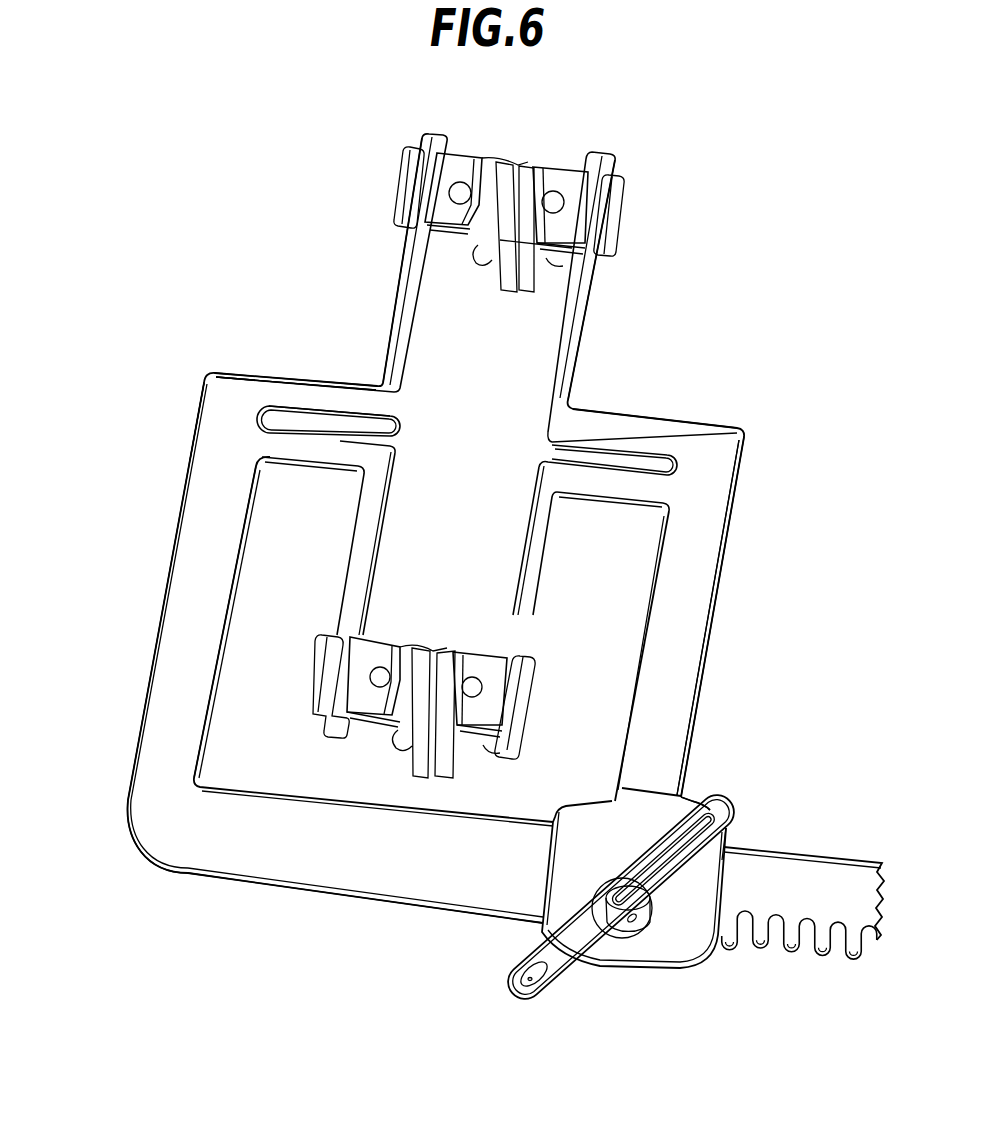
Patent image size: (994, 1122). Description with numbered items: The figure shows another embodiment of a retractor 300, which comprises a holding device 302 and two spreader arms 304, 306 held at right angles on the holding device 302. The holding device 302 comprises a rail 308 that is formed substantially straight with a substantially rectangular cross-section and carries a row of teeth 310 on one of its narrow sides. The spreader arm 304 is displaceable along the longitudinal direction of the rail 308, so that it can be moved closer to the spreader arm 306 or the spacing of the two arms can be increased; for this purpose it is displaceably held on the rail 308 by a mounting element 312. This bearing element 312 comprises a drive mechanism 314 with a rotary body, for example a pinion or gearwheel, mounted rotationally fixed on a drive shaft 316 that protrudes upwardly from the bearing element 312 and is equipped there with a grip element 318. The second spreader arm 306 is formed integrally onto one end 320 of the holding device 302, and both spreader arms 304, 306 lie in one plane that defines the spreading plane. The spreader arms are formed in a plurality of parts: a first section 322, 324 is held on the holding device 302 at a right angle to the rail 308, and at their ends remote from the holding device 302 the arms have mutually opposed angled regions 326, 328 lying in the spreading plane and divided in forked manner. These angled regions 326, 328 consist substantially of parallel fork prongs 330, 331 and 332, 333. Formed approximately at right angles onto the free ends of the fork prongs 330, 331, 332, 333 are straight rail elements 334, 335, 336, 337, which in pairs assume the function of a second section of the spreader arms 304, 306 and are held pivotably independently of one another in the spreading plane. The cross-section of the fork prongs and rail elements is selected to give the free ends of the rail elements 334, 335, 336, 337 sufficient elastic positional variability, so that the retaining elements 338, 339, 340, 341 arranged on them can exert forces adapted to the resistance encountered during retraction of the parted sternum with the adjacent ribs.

The retractor 300 is at (712, 286).
The holding device 302 is at (372, 918).
The spreader arm 304 is at (735, 570).
The spreader arm 306 is at (170, 570).
The rail 308 is at (813, 845).
The row of teeth 310 is at (835, 952).
The mounting element 312 is at (735, 820).
The drive mechanism 314 is at (620, 972).
The drive shaft 316 is at (633, 930).
The grip element 318 is at (545, 992).
The end of the holding device 320 is at (155, 872).
The first section 322 is at (685, 670).
The first section 324 is at (185, 660).
The angled region 326 is at (727, 430).
The angled region 328 is at (226, 372).
The fork prong 330 is at (622, 434).
The fork prong 331 is at (613, 485).
The fork prong 332 is at (312, 396).
The fork prong 333 is at (303, 452).
The rail element 334 is at (575, 322).
The rail element 335 is at (405, 358).
The rail element 336 is at (528, 600).
The rail element 337 is at (358, 575).
The retaining element 338 is at (540, 166).
The retaining element 339 is at (458, 651).
The retaining element 340 is at (497, 176).
The retaining element 341 is at (418, 650).